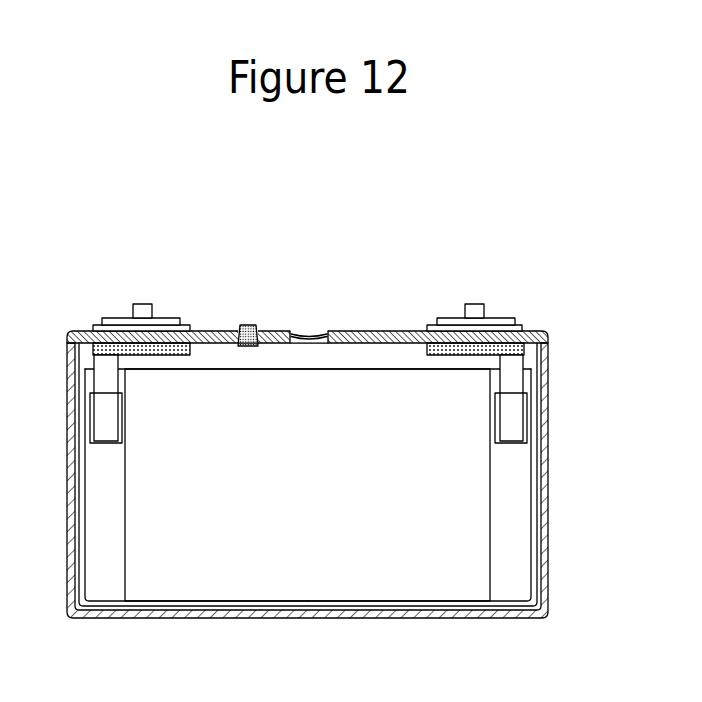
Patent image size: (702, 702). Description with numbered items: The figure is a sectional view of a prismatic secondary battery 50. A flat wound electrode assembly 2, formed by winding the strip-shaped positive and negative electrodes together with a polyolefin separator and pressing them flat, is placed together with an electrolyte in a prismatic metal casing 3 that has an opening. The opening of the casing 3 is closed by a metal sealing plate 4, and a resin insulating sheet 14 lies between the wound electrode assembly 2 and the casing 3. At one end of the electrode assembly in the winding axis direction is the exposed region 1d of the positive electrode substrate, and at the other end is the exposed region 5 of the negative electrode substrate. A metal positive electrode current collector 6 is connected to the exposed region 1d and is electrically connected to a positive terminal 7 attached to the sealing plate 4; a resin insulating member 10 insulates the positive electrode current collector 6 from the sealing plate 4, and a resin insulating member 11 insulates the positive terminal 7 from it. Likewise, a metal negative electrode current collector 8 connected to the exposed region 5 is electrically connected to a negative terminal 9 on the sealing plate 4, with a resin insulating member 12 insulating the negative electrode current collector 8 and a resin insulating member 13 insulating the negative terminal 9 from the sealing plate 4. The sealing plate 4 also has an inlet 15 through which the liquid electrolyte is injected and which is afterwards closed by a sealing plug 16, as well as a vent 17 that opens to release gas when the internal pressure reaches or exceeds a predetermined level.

The prismatic secondary battery 50 is at (78, 202).
The exposed region of the positive electrode substrate 1d is at (103, 592).
The flat wound electrode assembly 2 is at (260, 585).
The prismatic metal casing 3 is at (437, 618).
The metal sealing plate 4 is at (373, 335).
The exposed region of the negative electrode substrate 5 is at (512, 593).
The positive electrode current collector 6 is at (105, 417).
The positive terminal 7 is at (137, 308).
The negative electrode current collector 8 is at (510, 407).
The negative terminal 9 is at (482, 310).
The resin insulating member 10 is at (112, 353).
The resin insulating member 11 is at (100, 327).
The resin insulating member 12 is at (503, 355).
The resin insulating member 13 is at (518, 330).
The resin insulating sheet 14 is at (78, 550).
The inlet 15 is at (240, 327).
The sealing plug 16 is at (247, 334).
The vent 17 is at (305, 338).